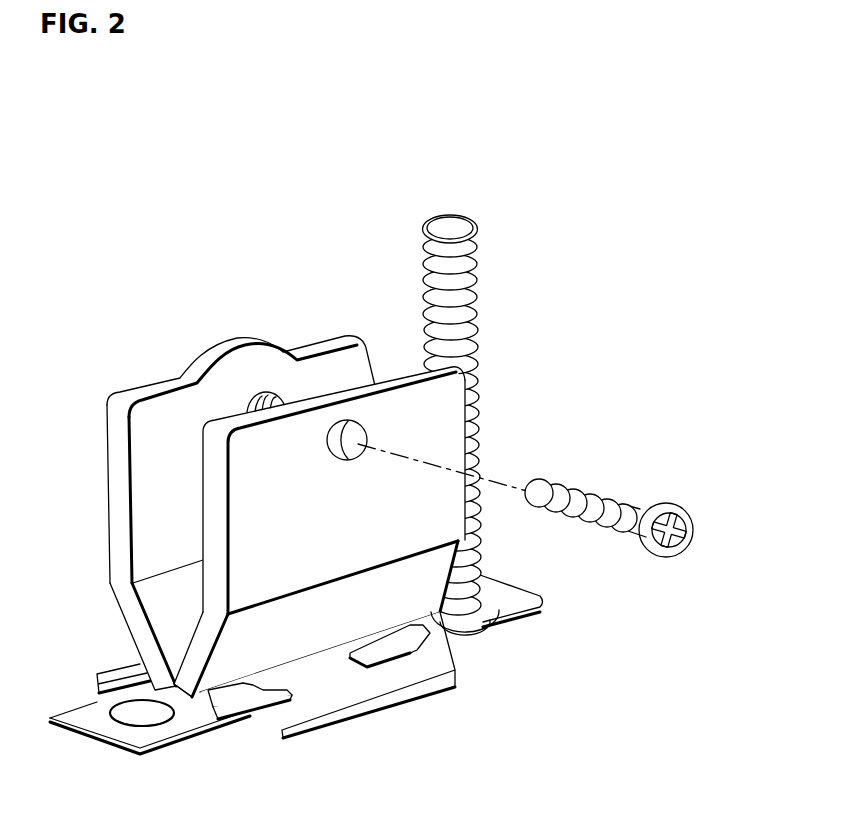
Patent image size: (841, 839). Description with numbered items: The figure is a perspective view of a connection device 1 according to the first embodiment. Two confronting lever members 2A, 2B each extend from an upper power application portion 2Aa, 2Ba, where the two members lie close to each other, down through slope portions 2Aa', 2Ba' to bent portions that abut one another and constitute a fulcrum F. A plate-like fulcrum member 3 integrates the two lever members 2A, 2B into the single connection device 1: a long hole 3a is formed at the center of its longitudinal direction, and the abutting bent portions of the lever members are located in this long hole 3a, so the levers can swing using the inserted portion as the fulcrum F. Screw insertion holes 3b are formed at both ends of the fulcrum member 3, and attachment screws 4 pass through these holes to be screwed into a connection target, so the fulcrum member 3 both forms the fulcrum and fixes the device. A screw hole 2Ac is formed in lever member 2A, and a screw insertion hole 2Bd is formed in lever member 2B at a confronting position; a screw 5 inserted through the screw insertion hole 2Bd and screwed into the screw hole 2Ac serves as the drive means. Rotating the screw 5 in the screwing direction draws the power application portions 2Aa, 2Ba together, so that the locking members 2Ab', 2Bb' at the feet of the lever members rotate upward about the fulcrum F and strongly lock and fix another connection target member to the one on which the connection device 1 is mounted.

The connection device 1 is at (68, 362).
The lever member 2A is at (163, 403).
The power application portion 2Aa is at (90, 494).
The slope portion 2Aa' is at (113, 636).
The locking member 2Ab' is at (88, 664).
The screw hole 2Ac is at (256, 403).
The lever member 2B is at (458, 395).
The power application portion 2Ba is at (500, 460).
The slope portion 2Ba' is at (316, 667).
The locking member 2Bb' is at (330, 678).
The screw insertion hole 2Bd is at (355, 421).
The fulcrum member 3 is at (80, 718).
The long hole 3a is at (232, 704).
The screw insertion hole 3b is at (133, 723).
The attachment screw 4 is at (480, 277).
The screw 5 is at (663, 502).
The fulcrum F is at (178, 690).